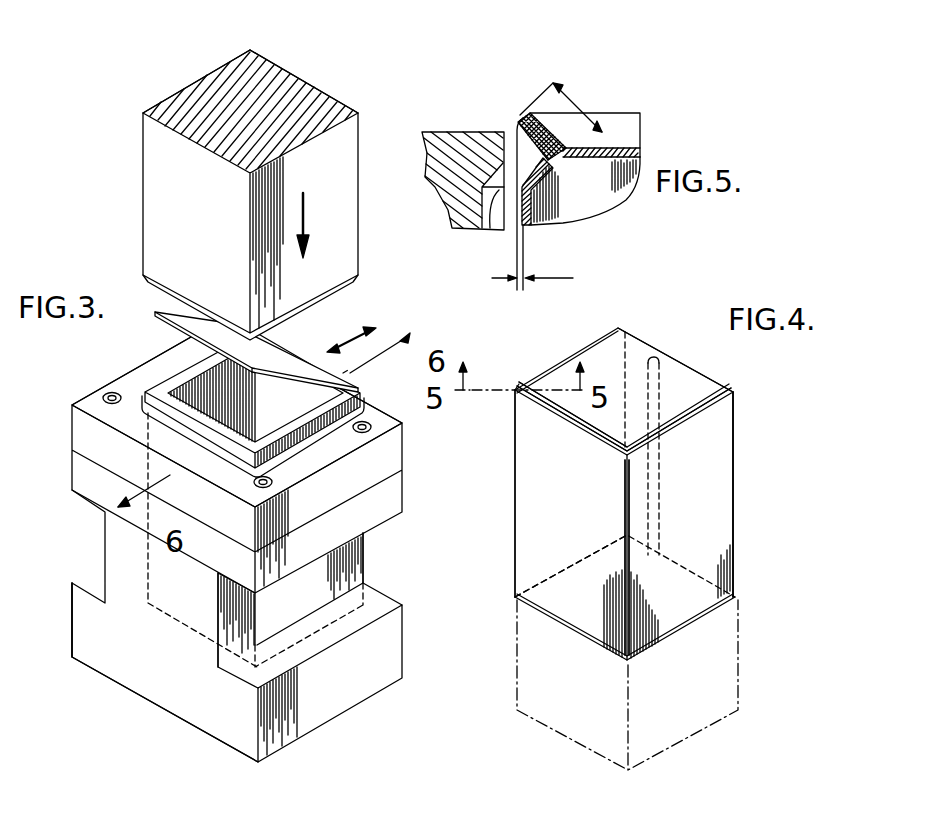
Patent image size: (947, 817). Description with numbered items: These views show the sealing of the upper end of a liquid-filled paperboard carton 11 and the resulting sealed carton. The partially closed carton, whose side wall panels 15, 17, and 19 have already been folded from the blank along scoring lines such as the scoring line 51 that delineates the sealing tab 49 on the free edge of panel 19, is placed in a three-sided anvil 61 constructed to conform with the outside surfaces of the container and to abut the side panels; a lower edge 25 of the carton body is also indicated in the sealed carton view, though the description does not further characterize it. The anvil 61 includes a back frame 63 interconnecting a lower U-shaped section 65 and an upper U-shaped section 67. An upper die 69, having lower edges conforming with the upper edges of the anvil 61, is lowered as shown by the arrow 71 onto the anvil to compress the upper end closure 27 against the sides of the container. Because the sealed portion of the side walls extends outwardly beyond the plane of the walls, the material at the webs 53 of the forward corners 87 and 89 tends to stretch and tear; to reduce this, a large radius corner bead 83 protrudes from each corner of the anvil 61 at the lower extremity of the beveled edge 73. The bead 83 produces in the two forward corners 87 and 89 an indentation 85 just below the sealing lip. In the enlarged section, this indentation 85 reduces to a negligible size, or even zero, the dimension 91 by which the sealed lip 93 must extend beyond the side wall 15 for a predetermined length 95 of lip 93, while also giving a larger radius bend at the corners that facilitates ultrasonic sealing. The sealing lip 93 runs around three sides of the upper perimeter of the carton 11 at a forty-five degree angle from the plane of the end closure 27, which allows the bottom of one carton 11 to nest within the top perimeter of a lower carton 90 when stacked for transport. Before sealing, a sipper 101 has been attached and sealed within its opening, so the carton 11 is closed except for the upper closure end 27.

In FIG. 3, the carton 11 is at (372, 557).
In FIG. 4, the carton 11 is at (741, 497).
In FIG. 5, the side wall panel 15 is at (530, 205).
In FIG. 4, the side wall panel 15 is at (537, 503).
In FIG. 4, the side wall panel 17 is at (560, 521).
In FIG. 4, the side wall panel 19 is at (685, 526).
In FIG. 4, the bottom edge 25 is at (548, 577).
In FIG. 3, the upper end closure 27 is at (270, 360).
In FIG. 5, the upper end closure 27 is at (553, 185).
In FIG. 4, the upper end closure 27 is at (640, 355).
In FIG. 3, the sealing tab 49 is at (291, 3).
In FIG. 3, the scoring line 51 is at (241, 3).
In FIG. 5, the web 53 is at (528, 118).
In FIG. 4, the web 53 is at (665, 500).
In FIG. 3, the anvil 61 is at (92, 398).
In FIG. 5, the anvil 61 is at (441, 135).
In FIG. 3, the back frame 63 is at (180, 587).
In FIG. 3, the lower U-shaped section 65 is at (387, 645).
In FIG. 3, the upper U-shaped section 67 is at (380, 455).
In FIG. 3, the upper die 69 is at (160, 171).
In FIG. 3, the arrow 71 is at (315, 213).
In FIG. 5, the beveled edge 73 is at (485, 130).
In FIG. 3, the corner bead 83 is at (422, 483).
In FIG. 5, the corner bead 83 is at (499, 192).
In FIG. 5, the indentation 85 is at (604, 157).
In FIG. 4, the indentation 85 is at (632, 460).
In FIG. 4, the forward corner 87 is at (514, 389).
In FIG. 4, the forward corner 89 is at (623, 458).
In FIG. 4, the lower carton 90 is at (742, 648).
In FIG. 5, the dimension 91 is at (544, 279).
In FIG. 5, the sealed lip 93 is at (541, 85).
In FIG. 4, the sealed lip 93 is at (558, 426).
In FIG. 5, the predetermined length 95 is at (561, 150).
In FIG. 4, the sipper 101 is at (660, 383).